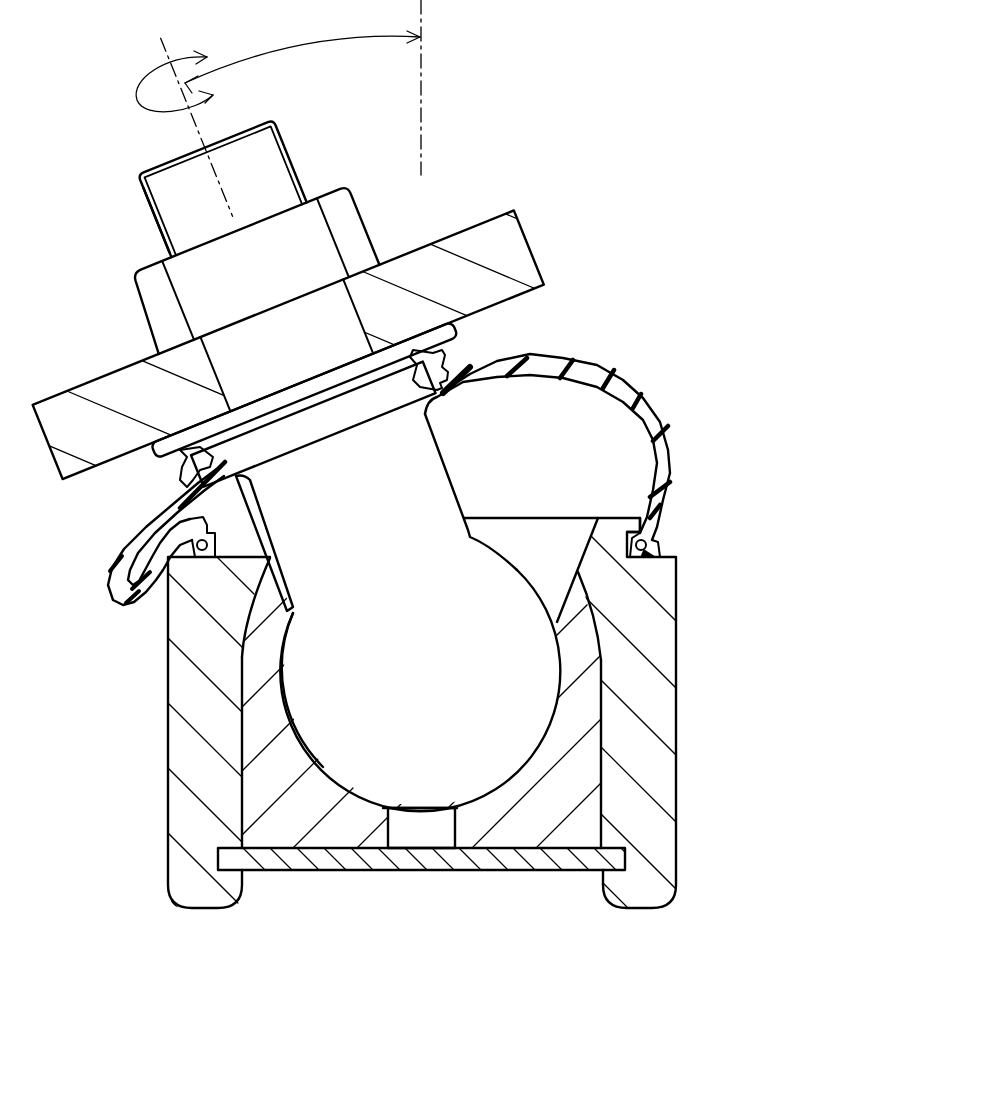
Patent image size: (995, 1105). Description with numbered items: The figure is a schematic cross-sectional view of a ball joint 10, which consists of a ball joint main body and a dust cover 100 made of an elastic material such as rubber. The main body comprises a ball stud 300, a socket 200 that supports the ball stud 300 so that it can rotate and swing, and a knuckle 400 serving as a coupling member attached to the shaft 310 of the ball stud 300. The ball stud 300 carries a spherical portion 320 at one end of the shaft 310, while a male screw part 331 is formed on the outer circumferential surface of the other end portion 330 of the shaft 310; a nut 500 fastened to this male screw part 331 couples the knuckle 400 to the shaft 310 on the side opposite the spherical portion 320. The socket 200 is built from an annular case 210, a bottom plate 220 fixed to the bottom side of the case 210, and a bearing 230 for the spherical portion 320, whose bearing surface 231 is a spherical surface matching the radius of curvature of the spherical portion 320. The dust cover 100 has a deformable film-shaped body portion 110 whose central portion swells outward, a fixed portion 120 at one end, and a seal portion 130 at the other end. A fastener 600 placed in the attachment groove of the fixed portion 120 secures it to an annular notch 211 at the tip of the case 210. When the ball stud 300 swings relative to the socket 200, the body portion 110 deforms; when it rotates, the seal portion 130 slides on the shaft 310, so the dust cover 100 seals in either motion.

The ball joint 10 is at (777, 172).
The dust cover 100 is at (655, 358).
The body portion 110 is at (650, 418).
The fixed portion 120 is at (660, 547).
The seal portion 130 is at (462, 360).
The socket 200 is at (707, 818).
The case 210 is at (440, 763).
The annular notch 211 is at (643, 550).
The bottom plate 220 is at (530, 858).
The bearing 230 is at (515, 695).
The bearing surface 231 is at (275, 694).
The ball stud 300 is at (512, 472).
The shaft 310 is at (423, 460).
The spherical portion 320 is at (333, 723).
The other end portion 330 is at (273, 168).
The male screw part 331 is at (147, 210).
The knuckle 400 is at (517, 258).
The nut 500 is at (317, 247).
The fastener 600 is at (660, 543).